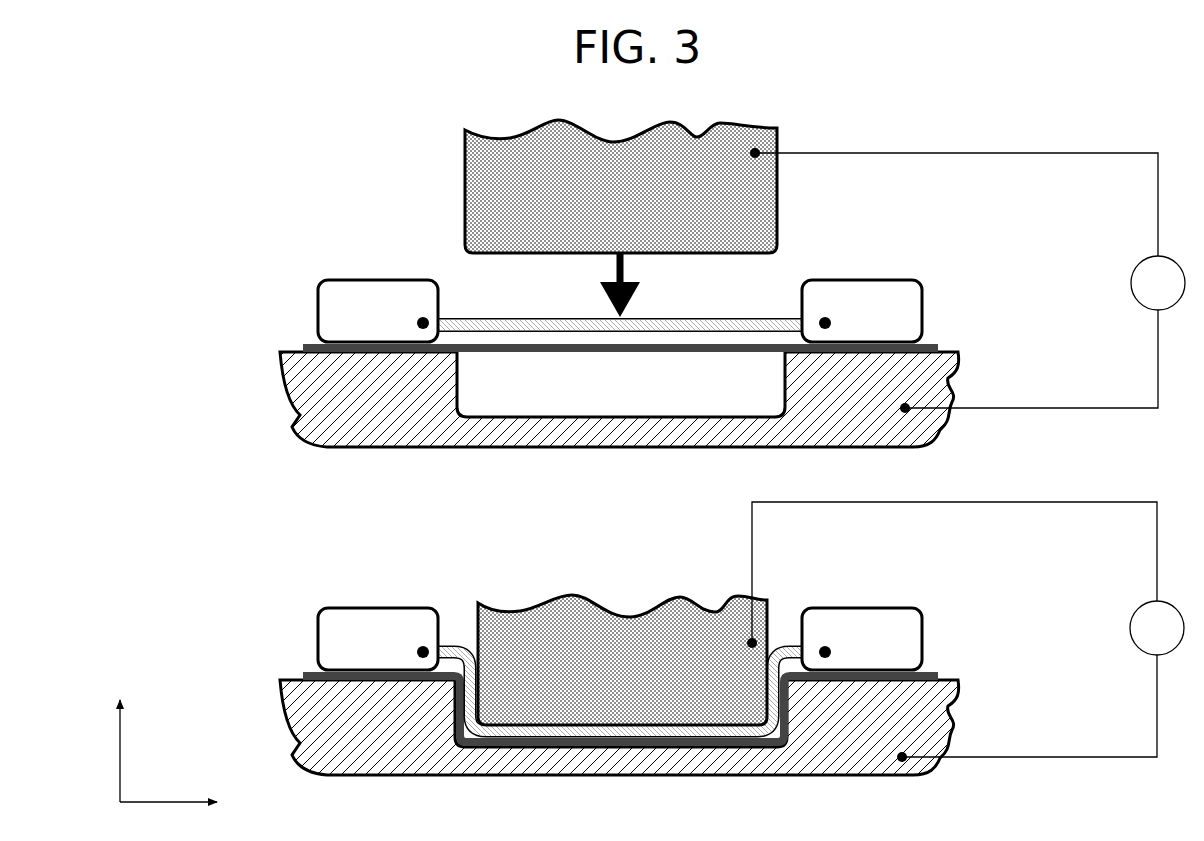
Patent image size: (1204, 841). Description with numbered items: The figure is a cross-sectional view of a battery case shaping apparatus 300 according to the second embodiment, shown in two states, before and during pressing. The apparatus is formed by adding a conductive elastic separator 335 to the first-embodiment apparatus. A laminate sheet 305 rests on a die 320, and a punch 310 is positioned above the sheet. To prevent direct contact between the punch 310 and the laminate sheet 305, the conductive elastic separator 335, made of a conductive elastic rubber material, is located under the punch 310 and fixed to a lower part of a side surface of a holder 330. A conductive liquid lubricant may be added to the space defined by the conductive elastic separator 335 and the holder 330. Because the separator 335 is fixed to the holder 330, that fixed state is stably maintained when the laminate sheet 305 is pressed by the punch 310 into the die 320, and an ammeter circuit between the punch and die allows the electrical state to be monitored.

The battery case shaping apparatus 300 is at (634, 480).
The laminate sheet 305 is at (307, 338).
The punch 310 is at (785, 222).
The die 320 is at (957, 383).
The holder 330 is at (927, 286).
The conductive elastic separator 335 is at (480, 311).